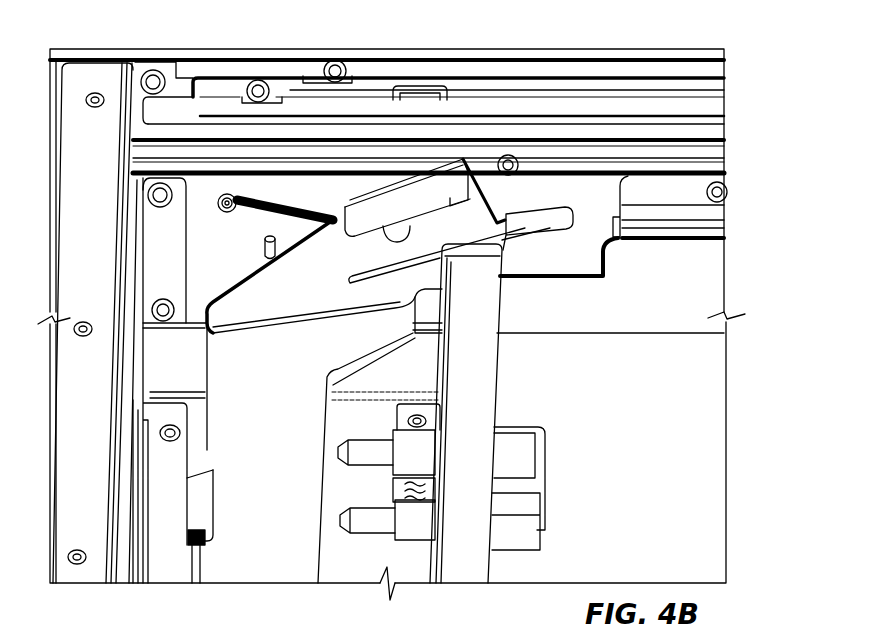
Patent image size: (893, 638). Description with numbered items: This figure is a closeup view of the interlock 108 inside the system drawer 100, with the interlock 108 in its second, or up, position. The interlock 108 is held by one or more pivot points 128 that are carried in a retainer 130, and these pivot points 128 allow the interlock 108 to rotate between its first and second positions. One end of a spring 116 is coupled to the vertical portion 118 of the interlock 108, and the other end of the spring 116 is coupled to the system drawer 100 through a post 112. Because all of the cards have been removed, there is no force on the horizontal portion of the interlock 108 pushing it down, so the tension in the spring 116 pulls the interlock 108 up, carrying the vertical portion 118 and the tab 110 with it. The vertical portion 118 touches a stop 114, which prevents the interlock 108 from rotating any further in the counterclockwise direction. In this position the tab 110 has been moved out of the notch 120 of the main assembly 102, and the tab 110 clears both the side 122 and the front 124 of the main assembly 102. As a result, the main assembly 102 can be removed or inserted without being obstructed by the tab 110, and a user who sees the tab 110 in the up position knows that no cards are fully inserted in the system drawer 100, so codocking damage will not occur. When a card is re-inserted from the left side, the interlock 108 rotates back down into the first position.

The system drawer 100 is at (740, 40).
The main assembly 102 is at (703, 393).
The interlock 108 is at (267, 568).
The tab 110 is at (556, 214).
The post 112 is at (221, 194).
The stop 114 is at (262, 247).
The spring 116 is at (283, 199).
The vertical portion 118 is at (328, 257).
The notch 120 is at (590, 264).
The side 122 is at (707, 296).
The front 124 is at (463, 565).
The pivot points 128 is at (203, 508).
The retainer 130 is at (158, 568).